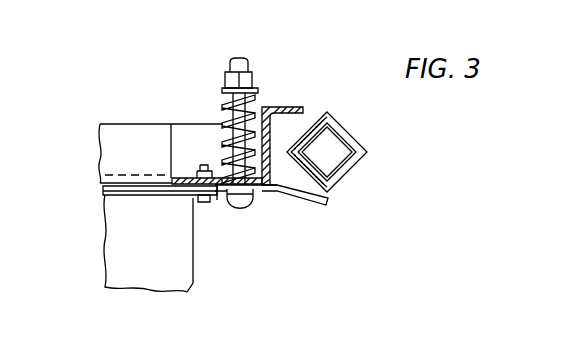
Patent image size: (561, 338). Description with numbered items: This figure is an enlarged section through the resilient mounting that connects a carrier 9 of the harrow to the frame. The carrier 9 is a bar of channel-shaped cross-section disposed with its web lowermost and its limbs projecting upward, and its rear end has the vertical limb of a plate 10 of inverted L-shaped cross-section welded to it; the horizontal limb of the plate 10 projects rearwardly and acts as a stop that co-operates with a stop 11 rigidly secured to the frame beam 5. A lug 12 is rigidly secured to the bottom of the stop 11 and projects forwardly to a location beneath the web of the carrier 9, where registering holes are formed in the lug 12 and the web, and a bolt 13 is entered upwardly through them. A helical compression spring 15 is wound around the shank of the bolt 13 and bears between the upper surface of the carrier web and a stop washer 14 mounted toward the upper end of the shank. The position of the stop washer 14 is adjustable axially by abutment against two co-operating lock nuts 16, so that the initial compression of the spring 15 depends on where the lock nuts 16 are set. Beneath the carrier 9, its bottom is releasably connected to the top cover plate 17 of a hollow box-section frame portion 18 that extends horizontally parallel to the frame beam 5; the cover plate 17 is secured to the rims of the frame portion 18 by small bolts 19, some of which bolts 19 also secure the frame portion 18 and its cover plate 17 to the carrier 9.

The frame beam 5 is at (356, 138).
The carrier 9 is at (133, 130).
The plate 10 is at (305, 105).
The stop 11 is at (318, 114).
The lug 12 is at (307, 199).
The bolt 13 is at (242, 58).
The stop washer 14 is at (259, 91).
The helical compression spring 15 is at (227, 103).
The lock nuts 16 is at (225, 80).
The top cover plate 17 is at (103, 188).
The hollow box-section frame portion 18 is at (194, 252).
The small bolts 19 is at (211, 202).